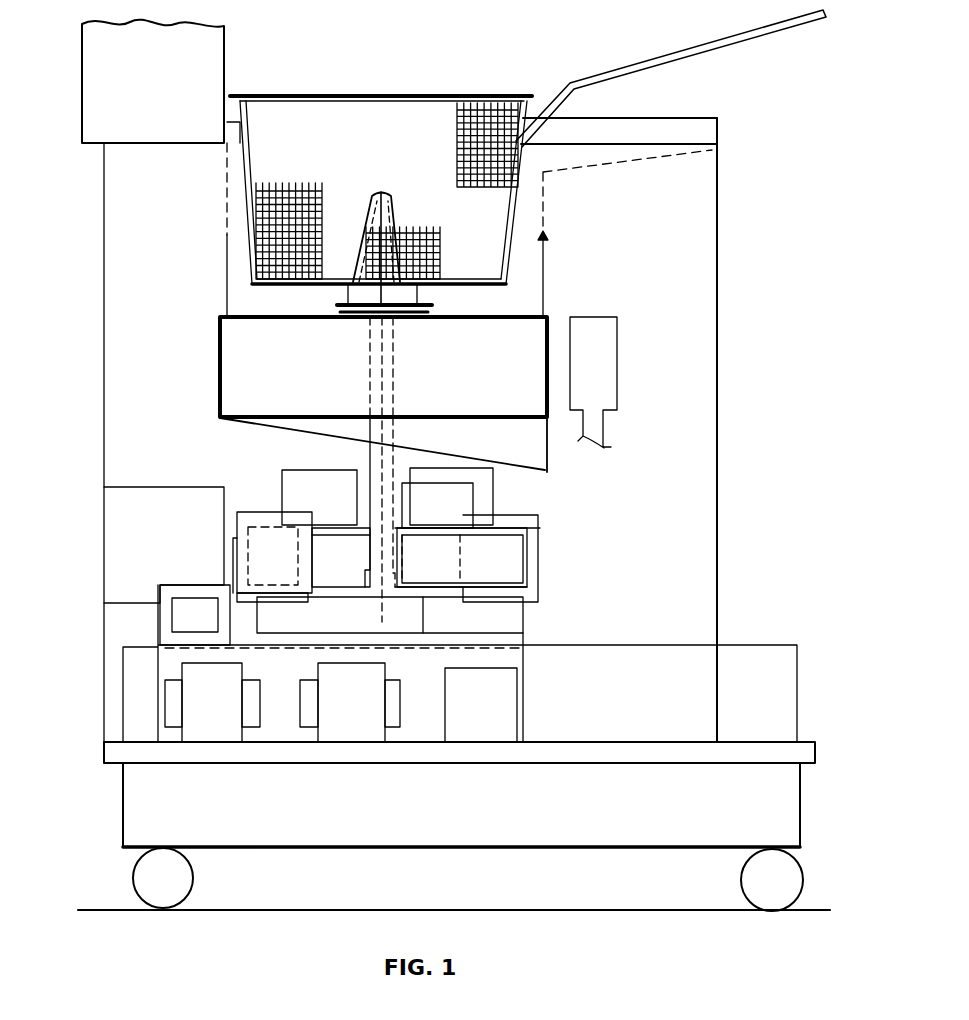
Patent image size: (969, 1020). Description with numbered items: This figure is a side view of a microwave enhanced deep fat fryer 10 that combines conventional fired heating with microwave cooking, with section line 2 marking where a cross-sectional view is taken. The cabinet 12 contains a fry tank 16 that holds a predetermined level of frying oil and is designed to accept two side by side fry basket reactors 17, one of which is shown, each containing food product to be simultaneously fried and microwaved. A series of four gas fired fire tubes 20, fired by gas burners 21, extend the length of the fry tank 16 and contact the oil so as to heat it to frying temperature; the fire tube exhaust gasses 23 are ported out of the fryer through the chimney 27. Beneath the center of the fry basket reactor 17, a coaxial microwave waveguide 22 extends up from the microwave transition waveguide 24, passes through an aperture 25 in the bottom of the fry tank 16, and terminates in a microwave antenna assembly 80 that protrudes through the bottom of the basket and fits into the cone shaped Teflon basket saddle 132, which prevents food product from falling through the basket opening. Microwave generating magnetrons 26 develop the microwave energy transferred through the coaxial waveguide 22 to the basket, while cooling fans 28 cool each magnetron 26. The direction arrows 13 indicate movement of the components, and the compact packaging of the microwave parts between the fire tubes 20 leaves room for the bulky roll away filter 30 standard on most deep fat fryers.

The microwave enhanced deep fat fryer 10 is at (748, 127).
The cabinet 12 is at (686, 259).
The direction of movement arrows 13 is at (380, 182).
The fry tank 16 is at (545, 204).
The fry basket reactor 17 is at (436, 120).
The gas fired fire tubes 20 is at (219, 338).
The gas burners 21 is at (592, 356).
The coaxial microwave waveguide 22 is at (402, 341).
The fire tube exhaust gasses 23 is at (150, 352).
The microwave transition waveguide 24 is at (540, 618).
The aperture 25 is at (394, 449).
The magnetron 26 is at (243, 554).
The chimney 27 is at (106, 84).
The cooling fan 28 is at (292, 495).
The roll away filter 30 is at (143, 806).
The microwave antenna assembly 80 is at (388, 200).
The basket saddle 132 is at (358, 245).
The section line 2- 2 is at (133, 298).